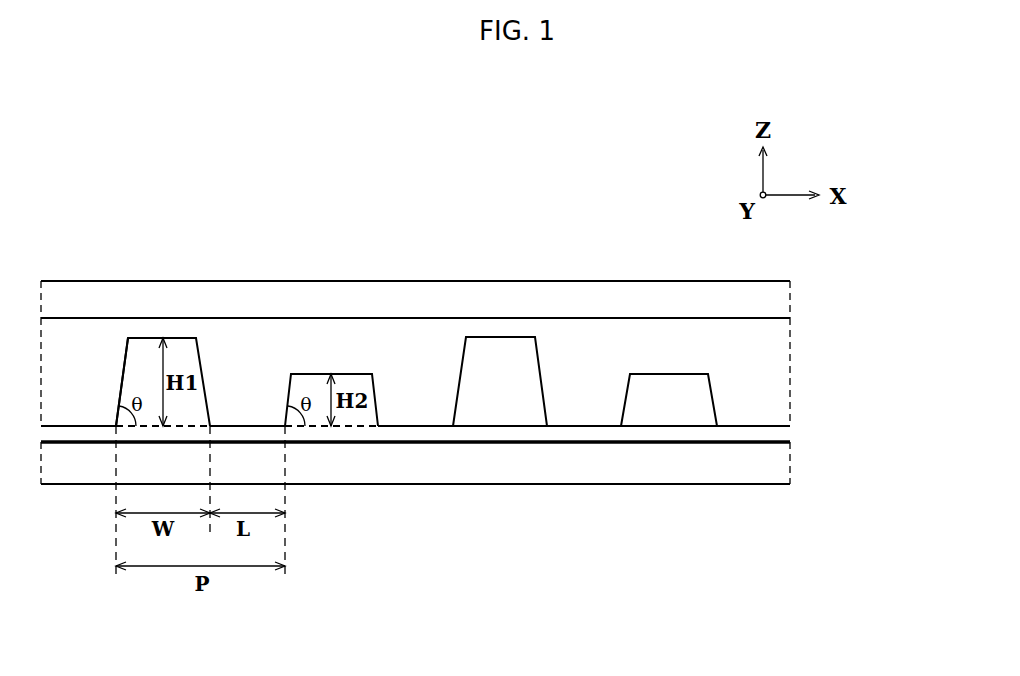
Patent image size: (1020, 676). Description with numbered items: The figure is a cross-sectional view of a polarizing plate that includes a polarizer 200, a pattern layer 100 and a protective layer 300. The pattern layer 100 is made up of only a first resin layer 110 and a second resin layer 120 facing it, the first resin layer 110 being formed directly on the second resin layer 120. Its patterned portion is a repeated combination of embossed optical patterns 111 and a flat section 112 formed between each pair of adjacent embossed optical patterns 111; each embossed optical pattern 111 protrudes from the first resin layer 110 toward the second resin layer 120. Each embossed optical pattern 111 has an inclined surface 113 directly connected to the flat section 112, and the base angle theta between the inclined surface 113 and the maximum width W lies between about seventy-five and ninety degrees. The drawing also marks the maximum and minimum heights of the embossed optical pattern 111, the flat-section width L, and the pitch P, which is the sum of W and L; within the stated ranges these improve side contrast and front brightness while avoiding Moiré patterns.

The pattern layer 100 is at (476, 383).
The first resin layer 110 is at (448, 436).
The second resin layer 120 is at (787, 360).
The embossed optical pattern 111 is at (145, 352).
The flat section 112 is at (245, 425).
The inclined surface 113 is at (125, 370).
The polarizer 200 is at (667, 475).
The protective layer 300 is at (664, 292).